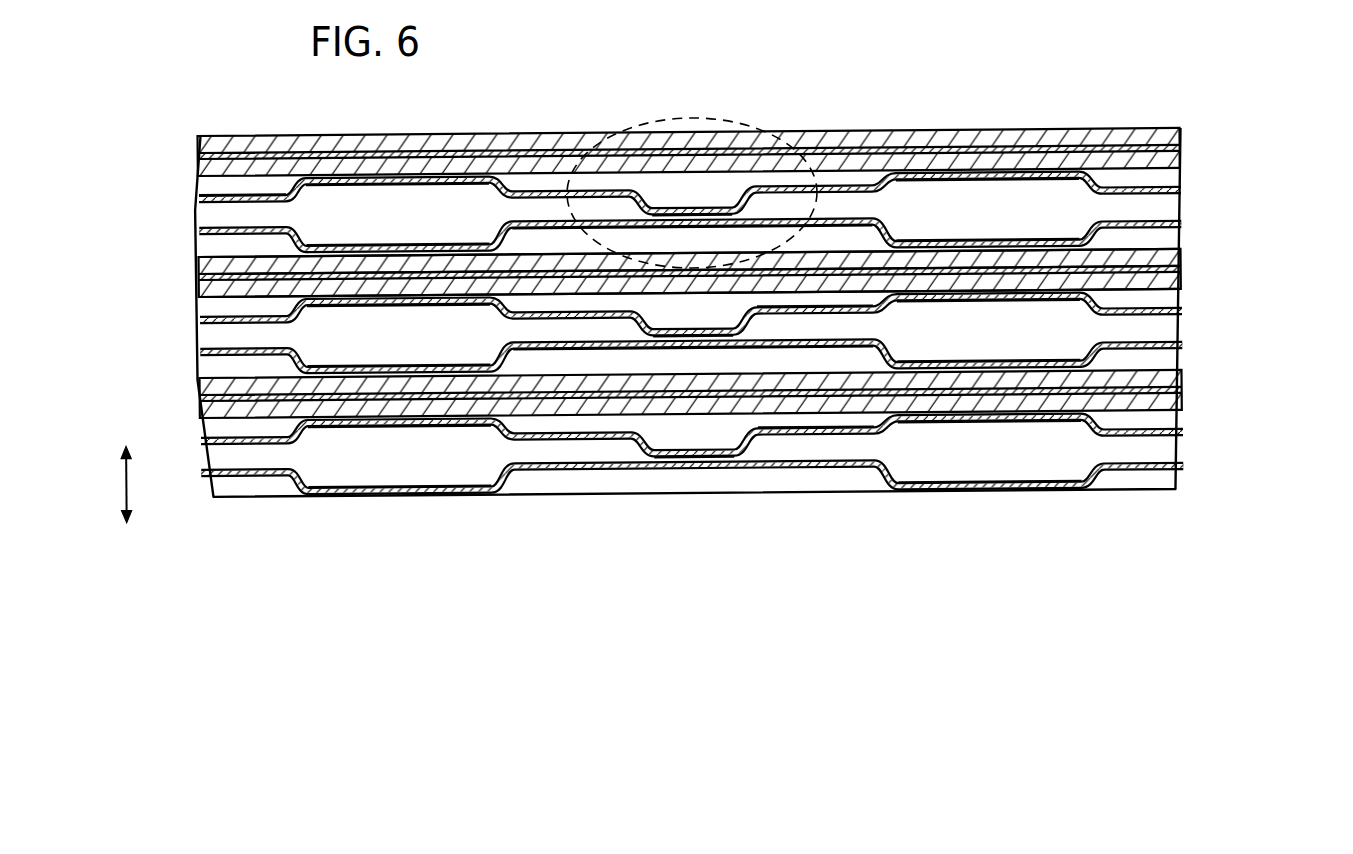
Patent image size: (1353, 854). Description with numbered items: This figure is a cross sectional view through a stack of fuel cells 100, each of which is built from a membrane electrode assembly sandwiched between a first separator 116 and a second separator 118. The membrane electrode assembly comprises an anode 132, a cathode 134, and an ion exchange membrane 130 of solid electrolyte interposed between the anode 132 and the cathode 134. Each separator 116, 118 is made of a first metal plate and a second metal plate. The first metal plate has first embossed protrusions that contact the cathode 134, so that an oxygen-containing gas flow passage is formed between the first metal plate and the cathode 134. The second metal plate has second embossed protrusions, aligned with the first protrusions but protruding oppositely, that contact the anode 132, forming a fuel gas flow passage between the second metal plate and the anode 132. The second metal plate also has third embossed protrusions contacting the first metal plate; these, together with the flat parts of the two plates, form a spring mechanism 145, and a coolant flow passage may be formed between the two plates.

The fuel cell stack 100 is at (1015, 67).
The first separator 116 is at (672, 201).
The second separator 118 is at (672, 338).
The ion exchange membrane 130 is at (198, 277).
The anode 132 is at (656, 307).
The cathode 134 is at (198, 263).
The spring mechanism 145 is at (737, 122).